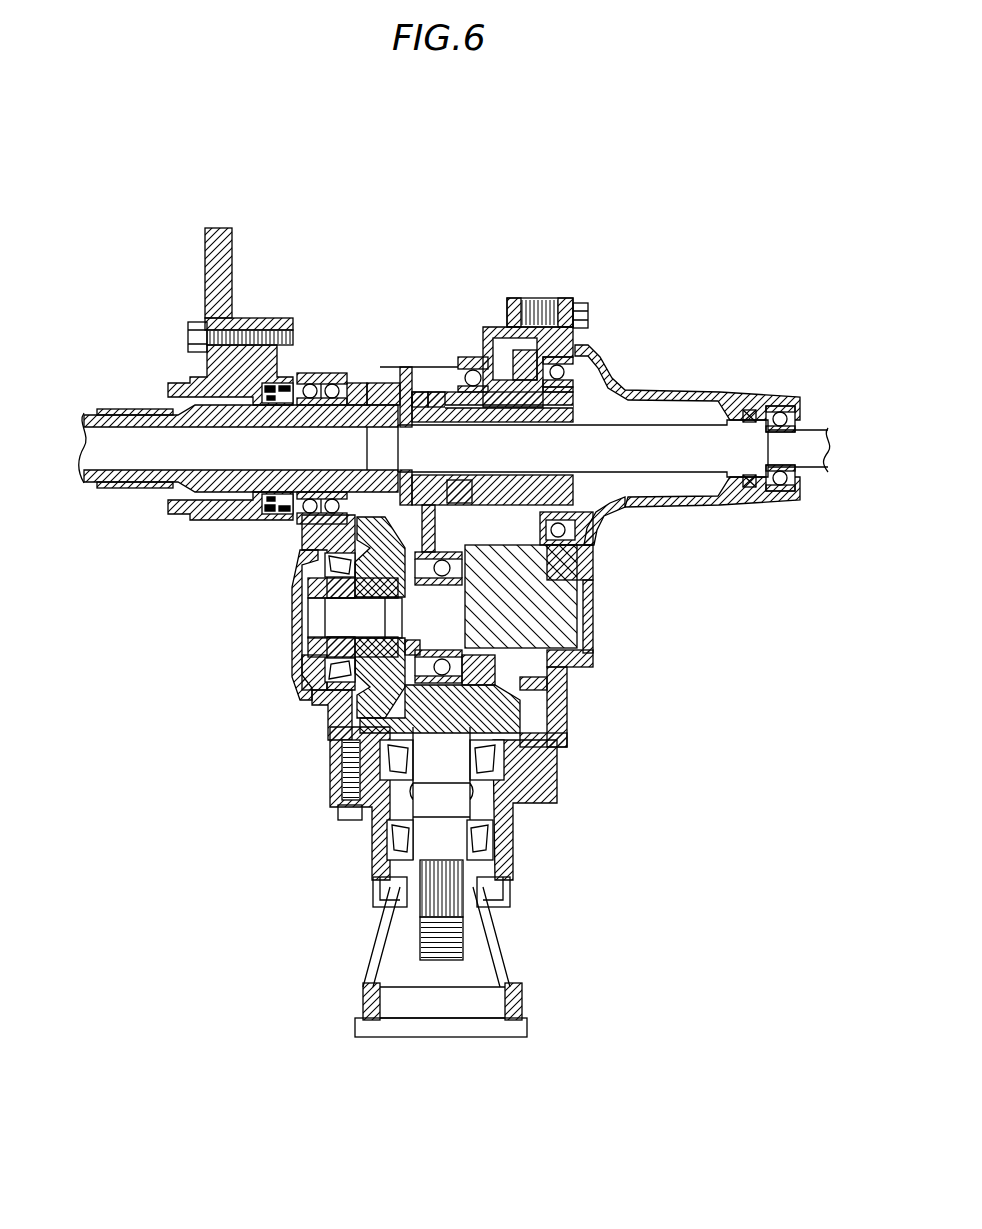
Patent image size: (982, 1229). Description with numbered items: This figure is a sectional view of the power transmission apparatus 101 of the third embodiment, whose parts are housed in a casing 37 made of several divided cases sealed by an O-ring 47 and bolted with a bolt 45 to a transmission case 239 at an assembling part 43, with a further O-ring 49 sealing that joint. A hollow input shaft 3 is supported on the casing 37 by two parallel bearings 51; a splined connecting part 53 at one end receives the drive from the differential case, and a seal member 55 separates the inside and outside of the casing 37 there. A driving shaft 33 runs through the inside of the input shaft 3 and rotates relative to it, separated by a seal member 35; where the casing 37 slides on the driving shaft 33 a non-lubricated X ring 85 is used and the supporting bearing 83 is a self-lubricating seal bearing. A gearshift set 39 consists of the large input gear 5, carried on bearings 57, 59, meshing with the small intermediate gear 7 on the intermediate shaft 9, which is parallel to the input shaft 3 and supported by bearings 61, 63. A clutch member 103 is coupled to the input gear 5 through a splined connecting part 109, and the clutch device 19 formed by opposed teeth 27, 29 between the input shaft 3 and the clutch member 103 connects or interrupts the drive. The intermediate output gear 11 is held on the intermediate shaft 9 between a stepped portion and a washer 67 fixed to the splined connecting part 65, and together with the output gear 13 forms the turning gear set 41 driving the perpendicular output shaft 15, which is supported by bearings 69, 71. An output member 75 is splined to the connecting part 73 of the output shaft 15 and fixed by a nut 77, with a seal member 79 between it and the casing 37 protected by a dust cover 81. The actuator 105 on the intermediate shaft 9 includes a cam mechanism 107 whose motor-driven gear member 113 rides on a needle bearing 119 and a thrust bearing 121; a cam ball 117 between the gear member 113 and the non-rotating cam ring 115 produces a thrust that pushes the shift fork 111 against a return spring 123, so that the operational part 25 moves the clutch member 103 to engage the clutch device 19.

The power transmission apparatus 101 is at (448, 217).
The transmission case 239 is at (245, 240).
The bolt 45 is at (195, 323).
The assembling part 43 is at (288, 369).
The O-ring 49 is at (253, 532).
The connecting part 53 is at (115, 400).
The input shaft 3 is at (225, 427).
The seal member 55 is at (273, 407).
The bearings 51 is at (323, 373).
The seal member 35 is at (392, 386).
The opposed teeth 27 is at (397, 387).
The clutch device 19 is at (410, 375).
The opposed teeth 29 is at (415, 390).
The clutch member 103 is at (433, 397).
The bearing 57 is at (473, 360).
The input gear 5 is at (528, 343).
The connecting part 109 is at (519, 392).
The bearing 59 is at (580, 360).
The casing 37 is at (650, 383).
The X ring 85 is at (750, 408).
The bearing 83 is at (790, 412).
The driving shaft 33 is at (805, 435).
The operational part 25 is at (422, 493).
The actuator 105 is at (459, 504).
The intermediate output gear 11 is at (380, 522).
The connecting part 65 is at (318, 603).
The washer 67 is at (297, 640).
The turning gear set 41 is at (317, 675).
The bearing 63 is at (320, 697).
The shift fork 111 is at (340, 603).
The cam ring 115 is at (385, 607).
The return spring 123 is at (392, 705).
The gear member 113 is at (470, 562).
The cam ball 117 is at (465, 634).
The thrust bearing 121 is at (470, 587).
The cam mechanism 107 is at (510, 675).
The needle bearing 119 is at (455, 662).
The gearshift set 39 is at (517, 545).
The intermediate shaft 9 is at (575, 617).
The bearing 61 is at (590, 663).
The output gear 13 is at (517, 710).
The intermediate gear 7 is at (523, 685).
The bearing 69 is at (523, 792).
The O-ring 47 is at (517, 760).
The output shaft 15 is at (433, 837).
The bearing 71 is at (487, 827).
The dust cover 81 is at (390, 902).
The seal member 79 is at (490, 898).
The connecting part 73 is at (437, 903).
The nut 77 is at (427, 937).
The output member 75 is at (513, 988).